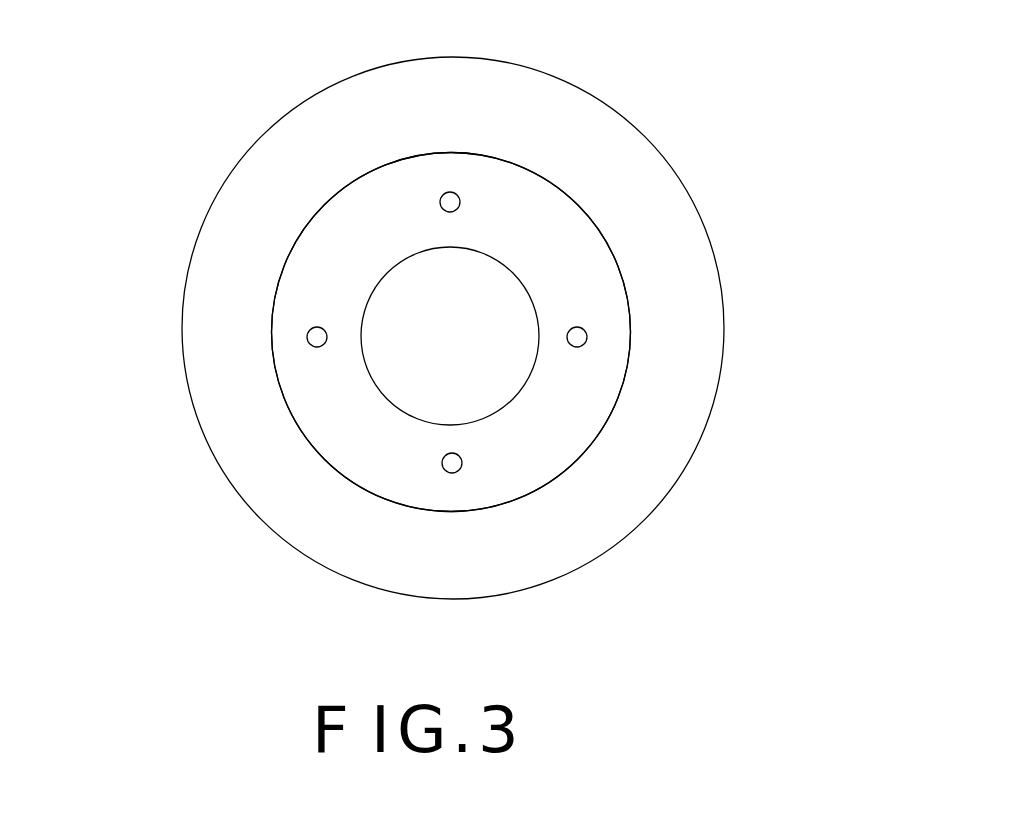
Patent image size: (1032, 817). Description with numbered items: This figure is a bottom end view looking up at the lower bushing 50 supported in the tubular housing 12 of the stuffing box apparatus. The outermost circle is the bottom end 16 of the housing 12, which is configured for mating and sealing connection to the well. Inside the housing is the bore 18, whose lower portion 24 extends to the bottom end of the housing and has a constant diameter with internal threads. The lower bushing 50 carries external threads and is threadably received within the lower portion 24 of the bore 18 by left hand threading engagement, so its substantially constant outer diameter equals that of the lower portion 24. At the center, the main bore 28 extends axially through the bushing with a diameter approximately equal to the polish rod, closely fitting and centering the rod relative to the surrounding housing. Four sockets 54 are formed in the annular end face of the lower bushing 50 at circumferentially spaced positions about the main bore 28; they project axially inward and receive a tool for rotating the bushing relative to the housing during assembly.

The tubular housing 12 is at (482, 301).
The bottom end 16 is at (701, 352).
The bore 18 is at (633, 292).
The lower portion 24 is at (597, 228).
The main bore 28 is at (415, 252).
The lower bushing 50 is at (525, 202).
The sockets 54 is at (306, 336).